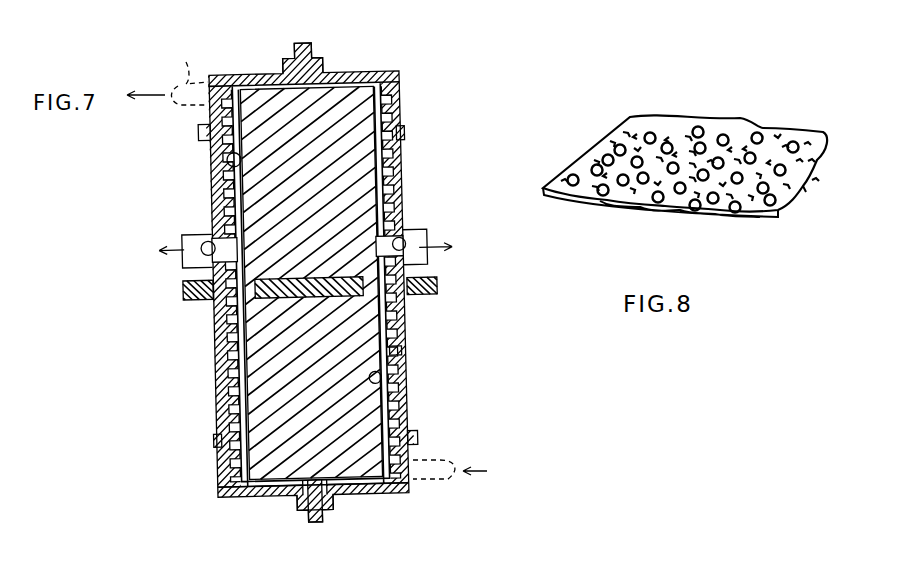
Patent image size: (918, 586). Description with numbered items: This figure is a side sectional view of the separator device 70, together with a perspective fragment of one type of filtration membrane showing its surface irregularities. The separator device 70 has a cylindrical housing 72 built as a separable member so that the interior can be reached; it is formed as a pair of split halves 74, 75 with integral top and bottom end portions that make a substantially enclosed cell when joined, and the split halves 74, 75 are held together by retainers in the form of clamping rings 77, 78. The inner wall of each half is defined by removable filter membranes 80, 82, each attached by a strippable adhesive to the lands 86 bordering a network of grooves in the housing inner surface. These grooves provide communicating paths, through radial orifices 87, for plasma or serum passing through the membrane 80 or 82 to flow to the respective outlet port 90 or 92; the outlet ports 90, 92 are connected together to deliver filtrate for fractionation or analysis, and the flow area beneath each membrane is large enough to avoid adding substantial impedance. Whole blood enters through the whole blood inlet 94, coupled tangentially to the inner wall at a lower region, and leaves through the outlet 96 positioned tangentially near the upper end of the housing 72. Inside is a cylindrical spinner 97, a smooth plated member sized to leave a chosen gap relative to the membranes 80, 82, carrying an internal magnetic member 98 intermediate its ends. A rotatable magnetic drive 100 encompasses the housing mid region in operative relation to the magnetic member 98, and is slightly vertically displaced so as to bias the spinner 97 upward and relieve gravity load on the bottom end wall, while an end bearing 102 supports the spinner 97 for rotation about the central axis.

The separator device 70 is at (421, 58).
The cylindrical housing 72 is at (405, 174).
The split half 74 is at (258, 497).
The split half 75 is at (366, 497).
The clamping ring 77 is at (407, 130).
The clamping ring 78 is at (412, 438).
The filter membrane 80 is at (240, 162).
The filter membrane 82 is at (382, 379).
The lands 86 is at (203, 126).
The radial orifices 87 is at (206, 239).
The outlet port 90 is at (185, 233).
The outlet port 92 is at (430, 265).
The whole blood inlet 94 is at (427, 455).
The outlet 96 is at (167, 78).
The cylindrical spinner 97 is at (338, 98).
The internal magnetic member 98 is at (332, 298).
The rotatable magnetic drive 100 is at (183, 288).
The end bearing 102 is at (313, 56).